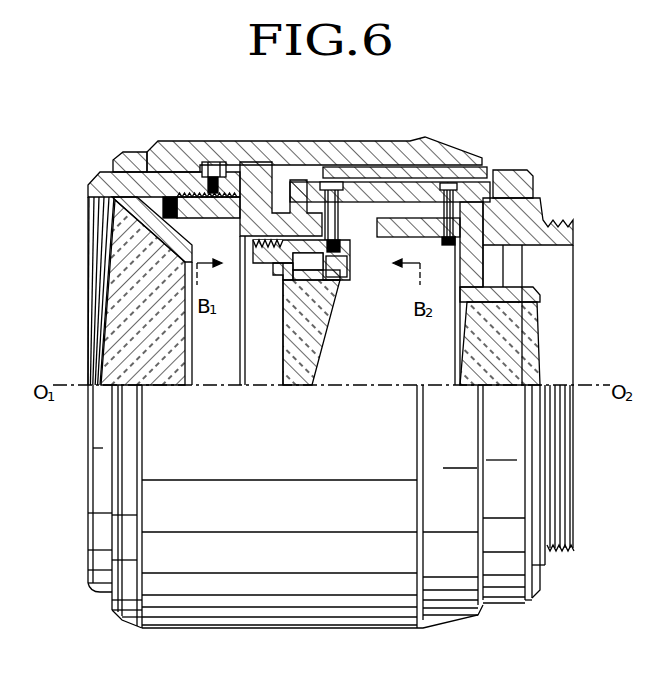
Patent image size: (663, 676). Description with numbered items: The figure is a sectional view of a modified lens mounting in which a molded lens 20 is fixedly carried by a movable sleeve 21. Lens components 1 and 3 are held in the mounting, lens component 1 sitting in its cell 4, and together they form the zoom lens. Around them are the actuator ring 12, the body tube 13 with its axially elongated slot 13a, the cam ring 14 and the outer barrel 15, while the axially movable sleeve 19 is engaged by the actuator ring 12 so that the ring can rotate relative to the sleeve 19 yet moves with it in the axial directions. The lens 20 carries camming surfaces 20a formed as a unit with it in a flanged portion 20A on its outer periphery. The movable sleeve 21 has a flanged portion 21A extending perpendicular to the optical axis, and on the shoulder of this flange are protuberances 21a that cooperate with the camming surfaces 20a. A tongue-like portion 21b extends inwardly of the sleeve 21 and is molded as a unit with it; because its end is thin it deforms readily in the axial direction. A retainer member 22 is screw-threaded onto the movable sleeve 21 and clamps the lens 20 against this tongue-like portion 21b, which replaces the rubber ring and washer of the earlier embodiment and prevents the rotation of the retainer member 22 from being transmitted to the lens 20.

The lens component 1 is at (158, 372).
The lens component 3 is at (502, 380).
The cell 4 is at (126, 158).
The actuator ring 12 is at (294, 152).
The body tube 13 is at (537, 203).
The axially elongated slot 13a is at (412, 212).
The cam ring 14 is at (375, 188).
The outer barrel 15 is at (514, 176).
The axially movable sleeve 19 is at (438, 240).
The molded lens 20 is at (312, 352).
The camming surfaces 20a is at (325, 275).
The flanged portion 20A is at (285, 288).
The movable sleeve 21 is at (347, 243).
The protuberances 21a is at (330, 270).
The flanged portion 21A is at (345, 268).
The tongue-like portion 21b is at (278, 277).
The retainer member 22 is at (268, 250).